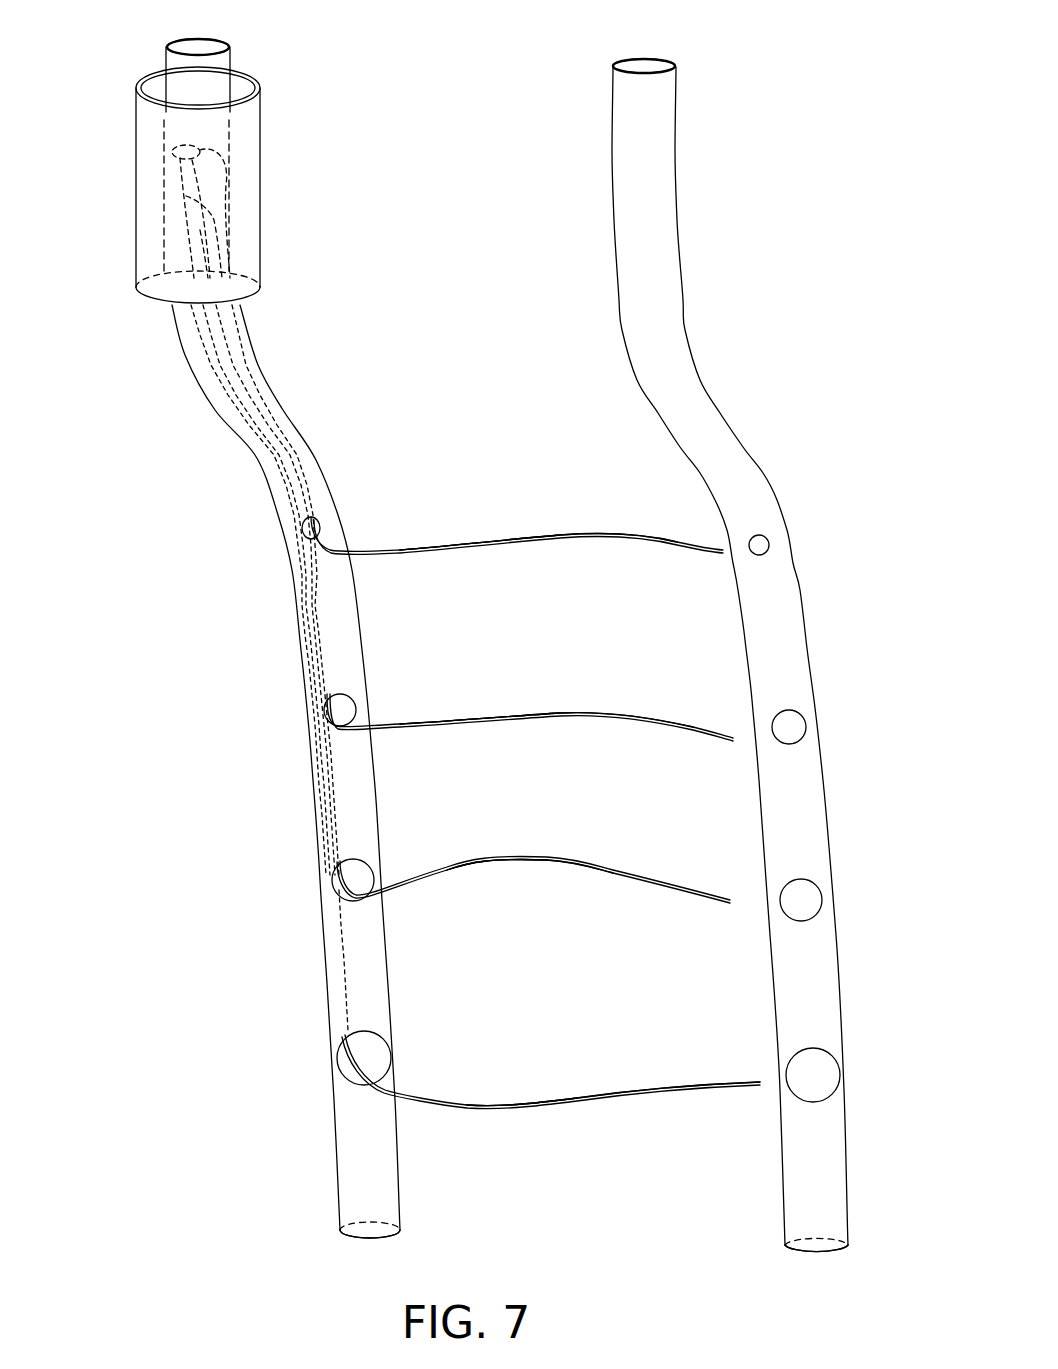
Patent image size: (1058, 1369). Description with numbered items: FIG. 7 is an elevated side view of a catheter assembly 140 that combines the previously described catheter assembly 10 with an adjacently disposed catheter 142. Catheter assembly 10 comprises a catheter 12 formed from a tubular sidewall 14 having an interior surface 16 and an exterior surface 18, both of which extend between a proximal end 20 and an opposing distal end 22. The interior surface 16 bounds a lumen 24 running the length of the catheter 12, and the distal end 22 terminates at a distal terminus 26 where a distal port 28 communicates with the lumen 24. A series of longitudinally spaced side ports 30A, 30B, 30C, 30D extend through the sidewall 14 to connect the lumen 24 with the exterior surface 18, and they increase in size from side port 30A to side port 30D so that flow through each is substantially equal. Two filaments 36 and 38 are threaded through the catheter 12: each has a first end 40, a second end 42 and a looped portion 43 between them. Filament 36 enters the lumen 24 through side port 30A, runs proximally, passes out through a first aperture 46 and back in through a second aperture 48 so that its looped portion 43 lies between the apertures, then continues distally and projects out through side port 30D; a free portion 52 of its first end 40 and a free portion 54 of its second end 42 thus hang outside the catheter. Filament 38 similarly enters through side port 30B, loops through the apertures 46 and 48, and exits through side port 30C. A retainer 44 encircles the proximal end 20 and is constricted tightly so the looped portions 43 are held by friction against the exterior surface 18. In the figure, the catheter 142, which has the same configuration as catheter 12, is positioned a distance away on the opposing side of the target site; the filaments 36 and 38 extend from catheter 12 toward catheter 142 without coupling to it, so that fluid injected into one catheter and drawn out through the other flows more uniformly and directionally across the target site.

The catheter assembly 10 is at (323, 212).
The catheter 12 is at (306, 393).
The tubular sidewall 14 is at (231, 47).
The interior surface 16 is at (184, 40).
The exterior surface 18 is at (178, 84).
The proximal end 20 is at (290, 268).
The distal end 22 is at (231, 1131).
The lumen 24 is at (198, 46).
The distal terminus 26 is at (345, 1240).
The distal port 28 is at (380, 1223).
The side port 30A is at (318, 525).
The side port 30B is at (350, 705).
The side port 30C is at (362, 870).
The side port 30D is at (380, 1045).
The filament 36 is at (537, 535).
The filament 38 is at (572, 715).
The first end 40 is at (462, 545).
The second end 42 is at (523, 858).
The looped portion 43 is at (160, 152).
The retainer 44 is at (240, 190).
The first aperture 46 is at (176, 158).
The second aperture 48 is at (186, 200).
The free portion 52 is at (347, 590).
The free portion 54 is at (487, 862).
The catheter assembly 140 is at (490, 138).
The catheter 142 is at (572, 202).